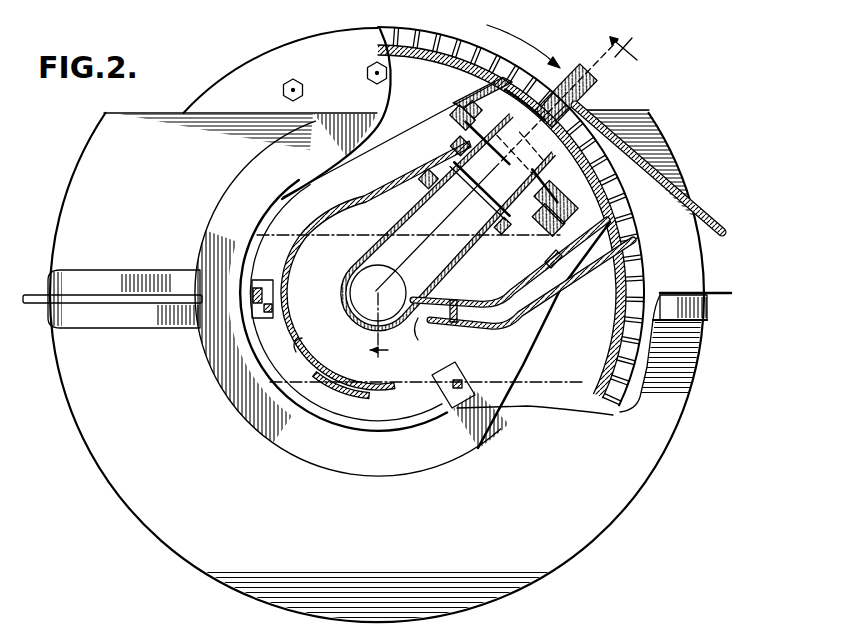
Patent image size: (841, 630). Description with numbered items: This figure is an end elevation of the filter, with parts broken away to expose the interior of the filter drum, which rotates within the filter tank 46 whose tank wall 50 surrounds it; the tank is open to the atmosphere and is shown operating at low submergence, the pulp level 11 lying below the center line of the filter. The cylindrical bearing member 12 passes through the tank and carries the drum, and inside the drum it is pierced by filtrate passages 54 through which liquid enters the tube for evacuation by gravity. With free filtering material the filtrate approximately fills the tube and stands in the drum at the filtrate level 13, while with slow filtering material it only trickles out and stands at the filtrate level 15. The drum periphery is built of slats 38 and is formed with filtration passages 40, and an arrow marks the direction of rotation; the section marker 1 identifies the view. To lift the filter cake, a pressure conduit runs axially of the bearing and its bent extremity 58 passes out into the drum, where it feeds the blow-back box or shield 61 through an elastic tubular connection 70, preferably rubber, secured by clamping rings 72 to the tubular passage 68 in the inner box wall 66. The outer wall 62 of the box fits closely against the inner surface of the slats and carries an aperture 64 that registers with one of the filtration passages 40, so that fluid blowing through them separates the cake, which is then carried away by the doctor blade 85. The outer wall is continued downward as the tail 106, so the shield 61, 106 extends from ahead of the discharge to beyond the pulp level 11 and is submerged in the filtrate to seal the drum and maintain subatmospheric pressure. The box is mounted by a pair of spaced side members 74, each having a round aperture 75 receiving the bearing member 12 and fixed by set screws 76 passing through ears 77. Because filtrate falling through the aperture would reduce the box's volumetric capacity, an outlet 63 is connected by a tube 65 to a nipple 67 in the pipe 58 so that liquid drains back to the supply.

The section line 1 is at (507, 202).
The pulp level 11 is at (645, 366).
The cylindrical bearing member 12 is at (335, 383).
The filtrate level 13 is at (270, 235).
The filtrate level 15 is at (527, 378).
The slats 38 is at (637, 265).
The filtration passages 40 is at (587, 80).
The filter tank 46 is at (100, 438).
The tank wall 50 is at (233, 400).
The filtrate passages 54 is at (290, 260).
The bent extremity 58 is at (425, 193).
The shield 61 is at (500, 93).
The outer wall 62 is at (548, 153).
The outlet 63 is at (562, 262).
The aperture 64 is at (540, 110).
The tube 65 is at (507, 317).
The inner box wall 66 is at (567, 217).
The nipple 67 is at (435, 329).
The tubular passage 68 is at (533, 157).
The elastic tubular connection 70 is at (457, 163).
The clamping rings 72 is at (484, 238).
The side members 74 is at (407, 132).
The round aperture 75 is at (300, 348).
The set screws 76 is at (260, 277).
The ears 77 is at (270, 313).
The doctor blade 85 is at (714, 226).
The tail 106 is at (610, 376).